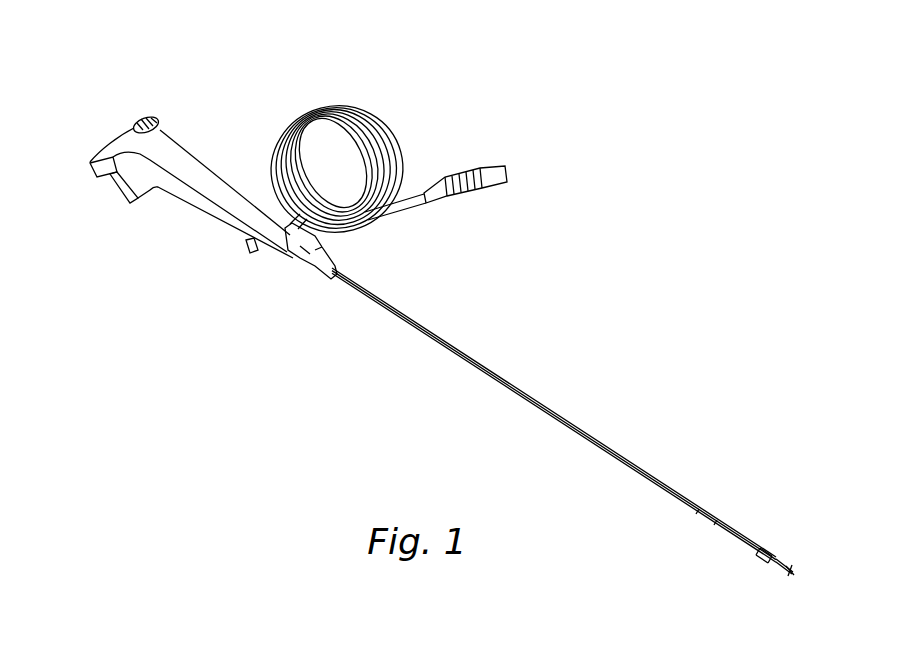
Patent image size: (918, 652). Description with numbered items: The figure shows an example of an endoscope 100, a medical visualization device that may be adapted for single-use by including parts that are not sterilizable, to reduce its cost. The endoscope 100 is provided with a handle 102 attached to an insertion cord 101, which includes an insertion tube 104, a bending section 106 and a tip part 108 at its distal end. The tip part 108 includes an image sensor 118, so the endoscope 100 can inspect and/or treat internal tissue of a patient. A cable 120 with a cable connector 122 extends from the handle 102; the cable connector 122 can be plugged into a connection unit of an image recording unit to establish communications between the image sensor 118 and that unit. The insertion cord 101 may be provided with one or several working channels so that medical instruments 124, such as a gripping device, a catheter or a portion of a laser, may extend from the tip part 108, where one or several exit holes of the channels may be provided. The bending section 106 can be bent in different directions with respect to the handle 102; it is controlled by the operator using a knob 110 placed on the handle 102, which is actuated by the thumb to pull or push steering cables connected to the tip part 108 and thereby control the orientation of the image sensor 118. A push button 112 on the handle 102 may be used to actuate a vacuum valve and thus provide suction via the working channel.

The endoscope 100 is at (252, 376).
The insertion cord 101 is at (668, 463).
The handle 102 is at (194, 110).
The insertion tube 104 is at (463, 344).
The bending section 106 is at (745, 535).
The tip part 108 is at (780, 559).
The knob 110 is at (148, 117).
The push button 112 is at (117, 190).
The image sensor 118 is at (760, 552).
The cable 120 is at (396, 132).
The cable connector 122 is at (505, 175).
The medical instrument 124 is at (778, 566).